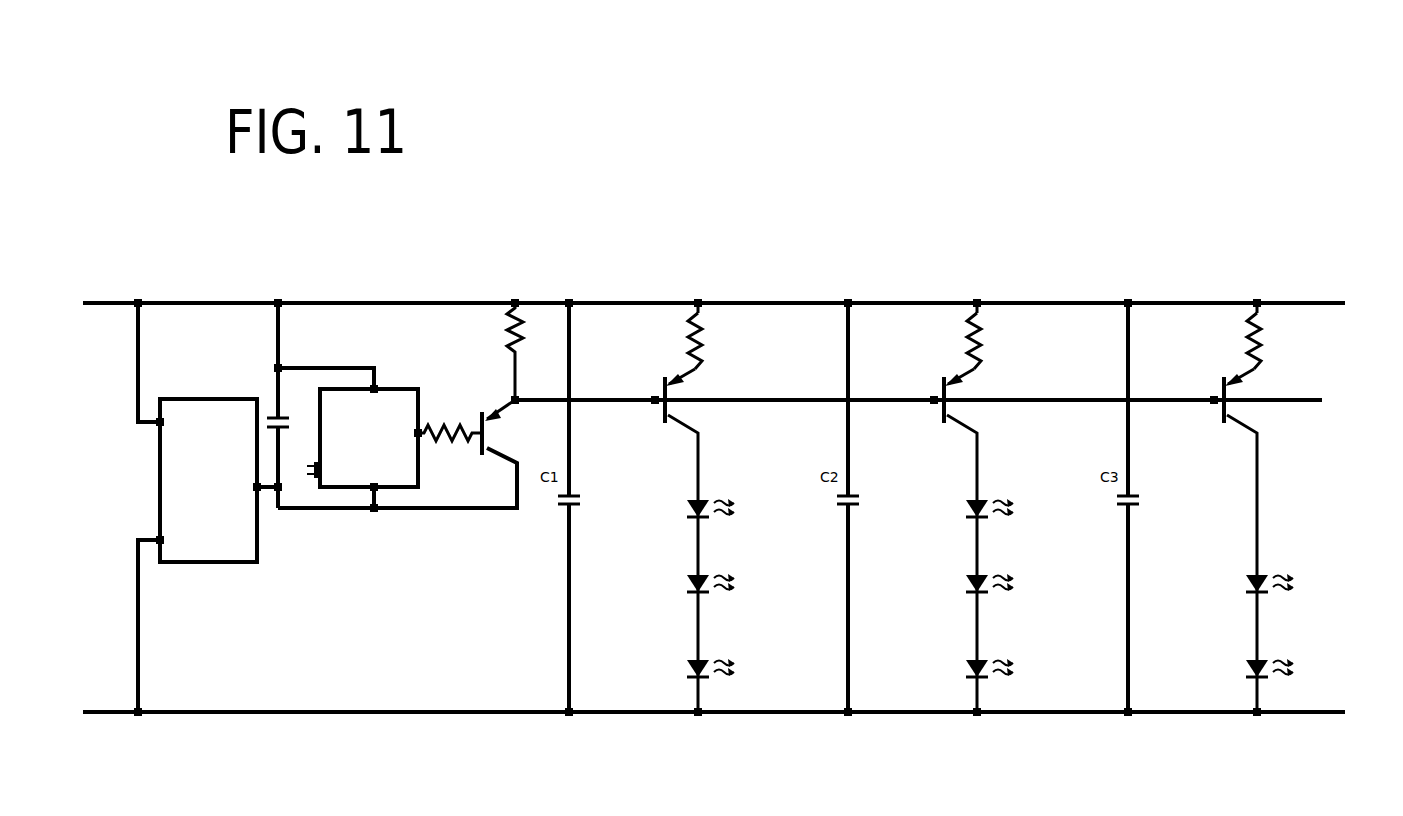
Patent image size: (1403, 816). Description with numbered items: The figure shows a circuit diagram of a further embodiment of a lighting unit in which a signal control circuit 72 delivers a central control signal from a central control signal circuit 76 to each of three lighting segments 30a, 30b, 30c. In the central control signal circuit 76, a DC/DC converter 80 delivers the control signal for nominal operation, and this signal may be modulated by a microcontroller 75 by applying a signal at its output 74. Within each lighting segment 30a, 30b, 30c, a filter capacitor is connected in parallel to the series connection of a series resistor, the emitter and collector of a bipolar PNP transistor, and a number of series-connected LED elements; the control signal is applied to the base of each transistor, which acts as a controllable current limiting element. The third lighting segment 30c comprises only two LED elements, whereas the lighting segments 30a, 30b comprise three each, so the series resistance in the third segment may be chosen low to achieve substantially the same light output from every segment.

The signal control circuit 72 is at (273, 275).
The output 74 is at (414, 428).
The microcontroller 75 is at (363, 425).
The central control signal circuit 76 is at (170, 589).
The DC/DC converter 80 is at (236, 547).
The lighting segment 30a is at (563, 271).
The lighting segment 30b is at (862, 268).
The lighting segment 30c is at (1127, 266).